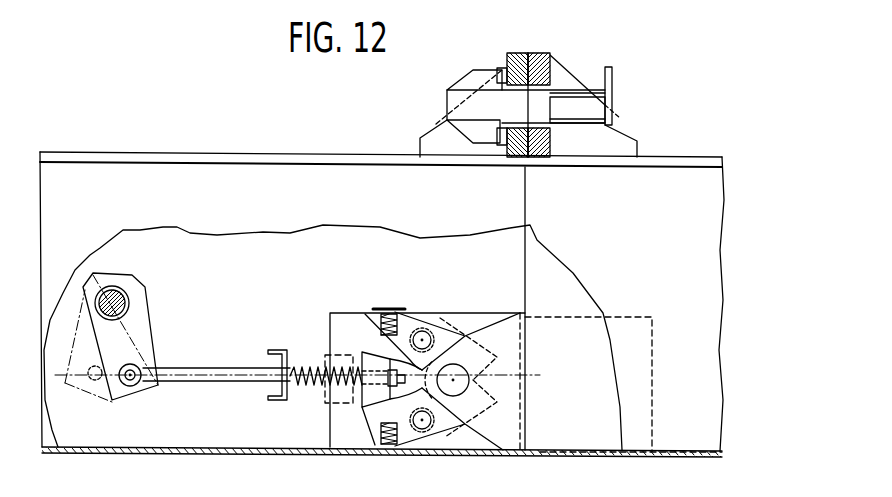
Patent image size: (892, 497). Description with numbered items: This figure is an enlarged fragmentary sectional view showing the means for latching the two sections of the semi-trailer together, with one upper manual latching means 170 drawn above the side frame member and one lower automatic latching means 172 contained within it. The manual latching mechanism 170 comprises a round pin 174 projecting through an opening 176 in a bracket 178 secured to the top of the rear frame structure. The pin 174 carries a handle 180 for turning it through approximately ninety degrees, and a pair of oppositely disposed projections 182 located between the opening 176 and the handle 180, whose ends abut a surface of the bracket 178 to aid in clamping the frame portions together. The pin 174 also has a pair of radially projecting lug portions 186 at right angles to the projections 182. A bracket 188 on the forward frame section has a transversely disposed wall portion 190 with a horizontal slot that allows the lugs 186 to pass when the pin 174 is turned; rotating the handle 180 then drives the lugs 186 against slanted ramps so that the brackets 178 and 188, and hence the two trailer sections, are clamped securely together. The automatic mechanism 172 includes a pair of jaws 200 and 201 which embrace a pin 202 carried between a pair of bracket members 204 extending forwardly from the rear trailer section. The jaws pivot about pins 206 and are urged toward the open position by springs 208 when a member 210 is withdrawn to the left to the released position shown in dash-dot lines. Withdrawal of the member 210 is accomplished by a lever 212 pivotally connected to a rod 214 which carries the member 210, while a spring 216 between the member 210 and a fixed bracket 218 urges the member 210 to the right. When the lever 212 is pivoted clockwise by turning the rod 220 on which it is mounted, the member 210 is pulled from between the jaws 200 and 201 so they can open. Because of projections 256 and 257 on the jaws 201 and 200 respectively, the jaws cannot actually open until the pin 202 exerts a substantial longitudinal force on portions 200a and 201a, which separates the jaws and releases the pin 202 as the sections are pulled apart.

The upper manual latching means 170 is at (476, 56).
The lower automatic latching means 172 is at (433, 291).
The round pin 174 is at (540, 100).
The opening 176 is at (543, 52).
The bracket 178 is at (627, 130).
The handle 180 is at (610, 67).
The projections 182 is at (577, 110).
The lug portions 186 is at (457, 82).
The bracket 188 is at (425, 140).
The transversely disposed wall portion 190 is at (518, 52).
The jaw 200 is at (443, 333).
The portion of jaw 200a is at (497, 357).
The jaw 201 is at (443, 428).
The portion of jaw 201a is at (497, 402).
The pin 202 is at (456, 377).
The bracket members 204 is at (502, 432).
The pins 206 is at (421, 331).
The springs 208 is at (367, 313).
The member 210 is at (337, 352).
The lever 212 is at (142, 337).
The rod 214 is at (215, 368).
The spring 216 is at (307, 385).
The fixed bracket 218 is at (273, 403).
The rod 220 is at (120, 290).
The projection 256 is at (370, 409).
The projection 257 is at (364, 353).